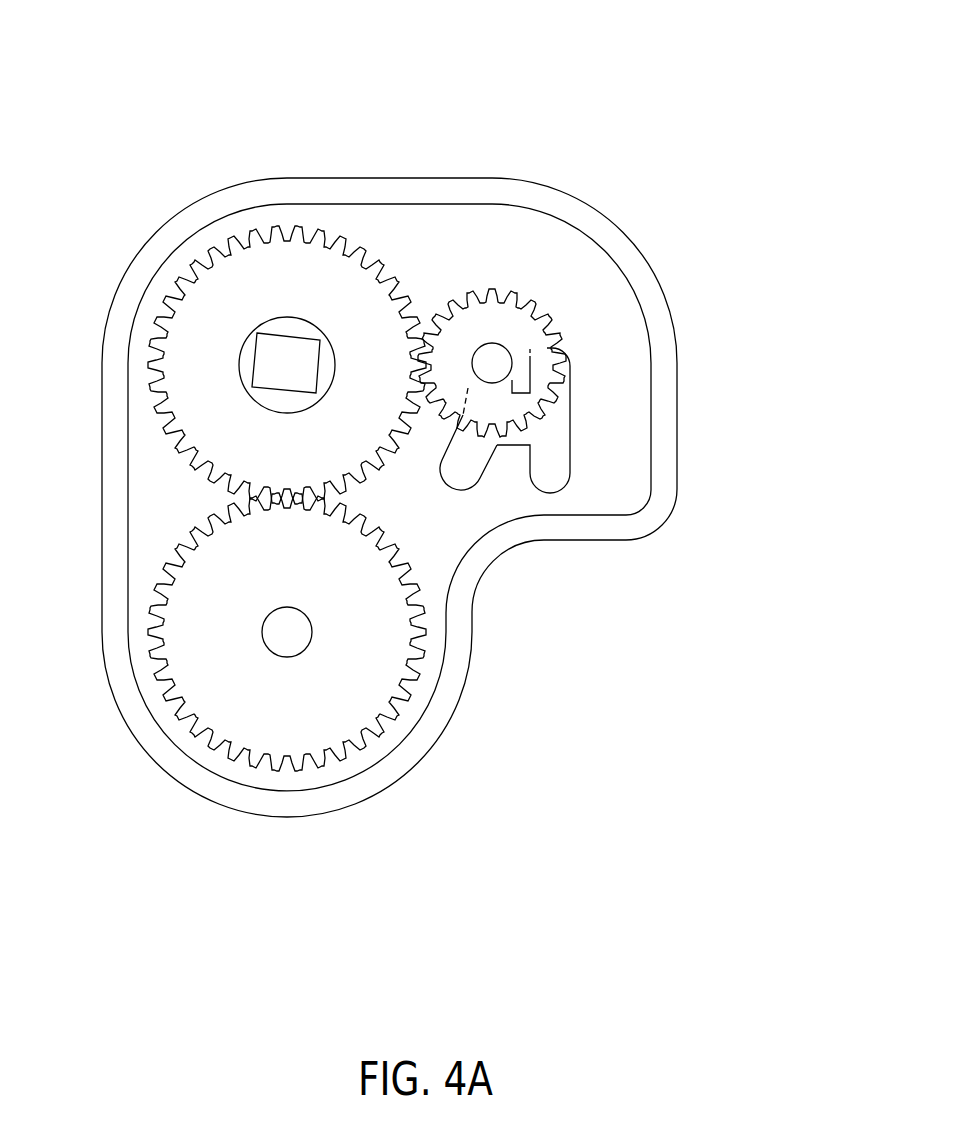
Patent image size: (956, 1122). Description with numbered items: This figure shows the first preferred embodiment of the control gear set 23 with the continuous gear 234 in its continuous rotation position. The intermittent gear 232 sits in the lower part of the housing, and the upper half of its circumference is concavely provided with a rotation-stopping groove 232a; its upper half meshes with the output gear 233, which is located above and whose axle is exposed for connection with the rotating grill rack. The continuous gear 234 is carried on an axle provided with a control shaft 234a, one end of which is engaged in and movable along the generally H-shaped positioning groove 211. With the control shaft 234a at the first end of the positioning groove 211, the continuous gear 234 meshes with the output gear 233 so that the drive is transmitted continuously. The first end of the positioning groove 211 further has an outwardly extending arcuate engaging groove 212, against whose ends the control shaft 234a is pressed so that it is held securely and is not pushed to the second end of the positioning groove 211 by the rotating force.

The control gear set 23 is at (608, 74).
The positioning groove 211 is at (593, 423).
The engaging groove 212 is at (463, 467).
The intermittent gear 232 is at (283, 723).
The rotation-stopping groove 232a is at (173, 577).
The output gear 233 is at (280, 262).
The continuous gear 234 is at (495, 290).
The control shaft 234a is at (495, 363).